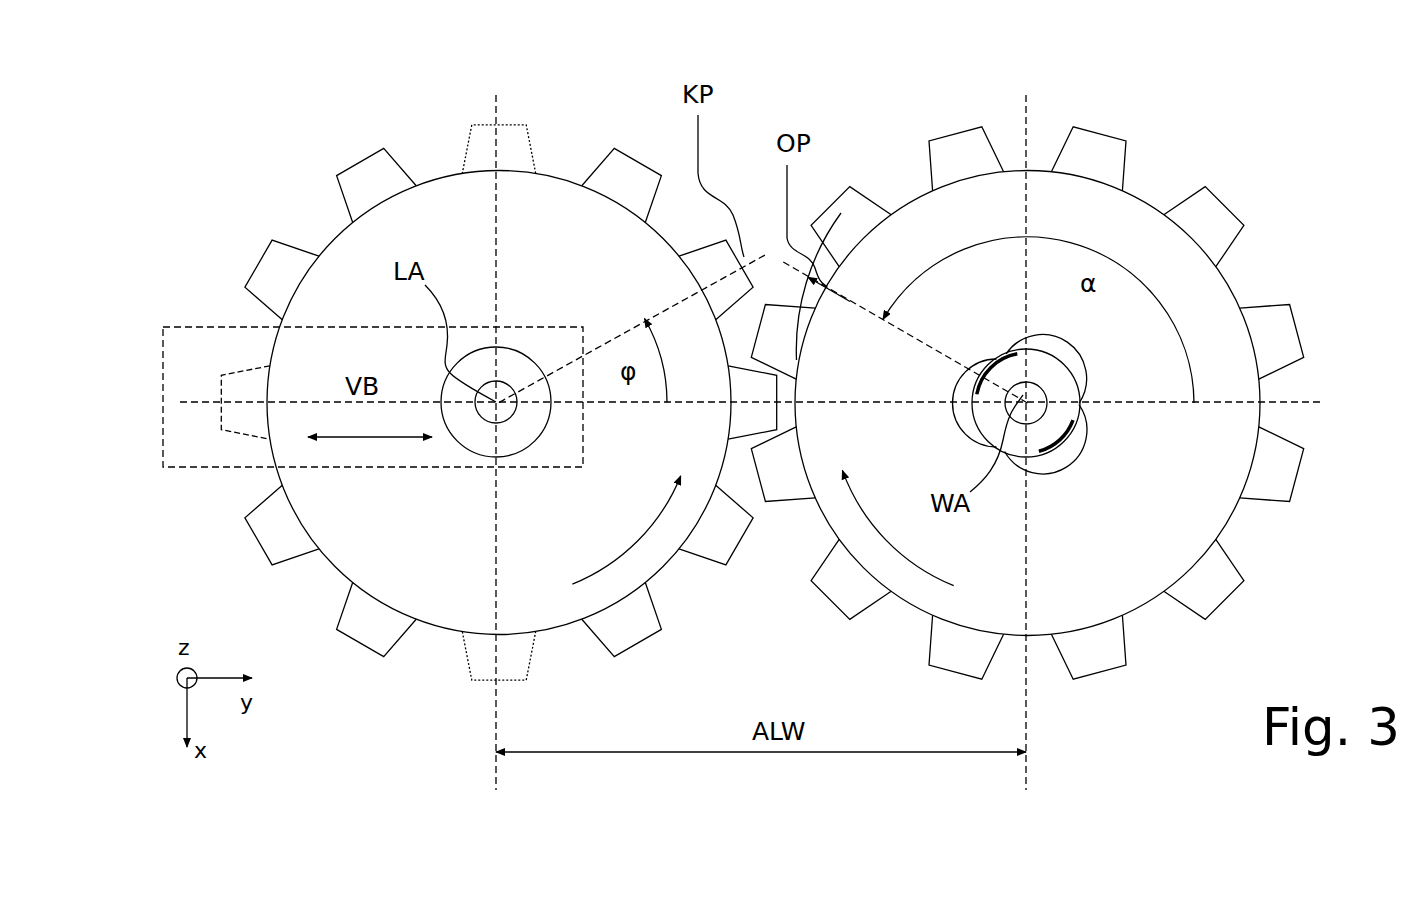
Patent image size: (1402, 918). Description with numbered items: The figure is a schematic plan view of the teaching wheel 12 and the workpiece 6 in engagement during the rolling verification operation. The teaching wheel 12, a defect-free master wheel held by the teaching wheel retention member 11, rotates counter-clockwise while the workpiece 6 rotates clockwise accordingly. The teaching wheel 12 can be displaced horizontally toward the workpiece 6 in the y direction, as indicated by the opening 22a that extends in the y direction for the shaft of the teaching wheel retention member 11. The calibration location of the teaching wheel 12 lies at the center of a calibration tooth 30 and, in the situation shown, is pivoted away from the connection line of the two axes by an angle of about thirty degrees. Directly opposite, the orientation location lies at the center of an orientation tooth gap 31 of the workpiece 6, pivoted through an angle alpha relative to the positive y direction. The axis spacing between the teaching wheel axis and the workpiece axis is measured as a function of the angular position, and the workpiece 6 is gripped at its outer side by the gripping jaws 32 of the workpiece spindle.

The workpiece 6 is at (1210, 310).
The teaching wheel retention member 11 is at (505, 370).
The teaching wheel 12 is at (352, 545).
The opening 22a is at (188, 350).
The calibration tooth 30 is at (712, 265).
The orientation tooth gap 31 is at (812, 297).
The gripping jaws 32 is at (1063, 453).